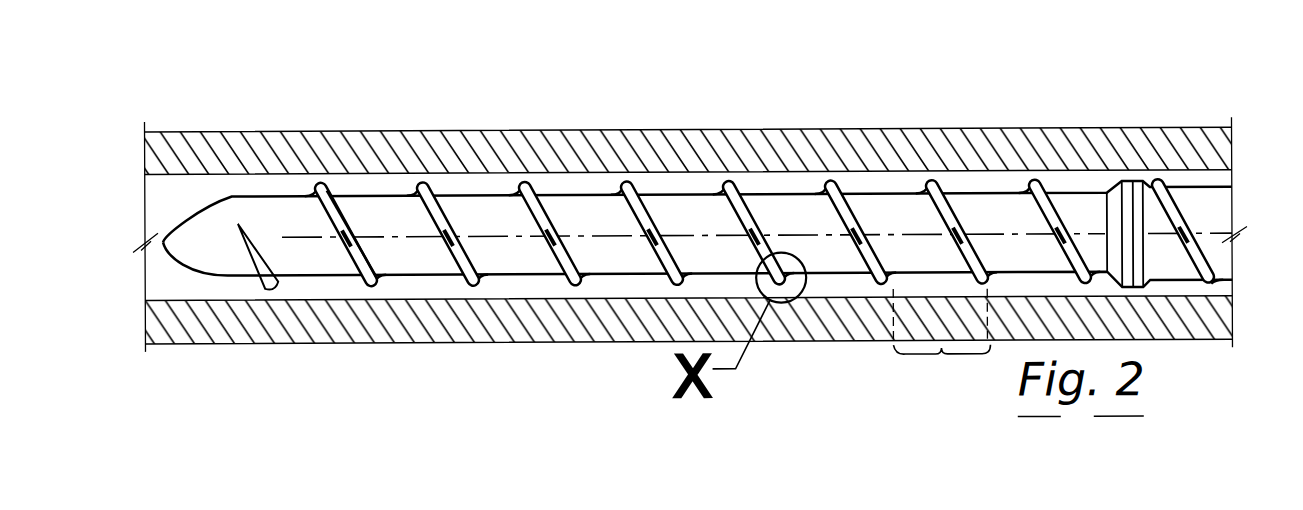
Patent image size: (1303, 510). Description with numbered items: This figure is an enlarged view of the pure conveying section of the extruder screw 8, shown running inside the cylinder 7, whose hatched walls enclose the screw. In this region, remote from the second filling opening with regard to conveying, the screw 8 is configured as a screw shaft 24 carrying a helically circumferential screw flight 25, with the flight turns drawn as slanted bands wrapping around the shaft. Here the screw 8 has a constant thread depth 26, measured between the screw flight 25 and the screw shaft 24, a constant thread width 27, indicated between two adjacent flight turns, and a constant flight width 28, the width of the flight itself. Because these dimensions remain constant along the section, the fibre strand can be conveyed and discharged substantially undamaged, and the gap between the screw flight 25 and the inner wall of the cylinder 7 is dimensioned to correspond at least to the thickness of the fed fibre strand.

The cylinder 7 is at (1147, 138).
The screw 8 is at (697, 218).
The screw shaft 24 is at (285, 219).
The screw flight 25 is at (564, 284).
The thread depth 26 is at (358, 284).
The thread width 27 is at (941, 340).
The flight width 28 is at (377, 286).